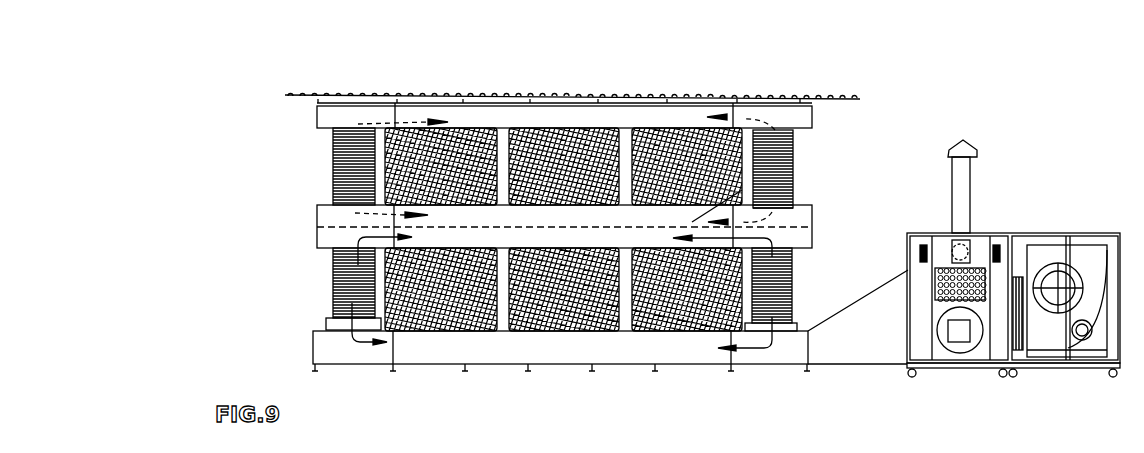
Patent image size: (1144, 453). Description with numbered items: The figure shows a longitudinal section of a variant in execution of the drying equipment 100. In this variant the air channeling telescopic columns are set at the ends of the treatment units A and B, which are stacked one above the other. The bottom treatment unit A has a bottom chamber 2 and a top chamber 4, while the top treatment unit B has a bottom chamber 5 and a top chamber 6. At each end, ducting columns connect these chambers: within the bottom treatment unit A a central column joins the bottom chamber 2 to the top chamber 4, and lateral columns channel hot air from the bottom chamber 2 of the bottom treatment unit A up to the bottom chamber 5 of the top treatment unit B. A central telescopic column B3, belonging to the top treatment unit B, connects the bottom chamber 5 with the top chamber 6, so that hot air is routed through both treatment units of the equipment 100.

The drying equipment 100 is at (918, 94).
The bottom chamber of the bottom treatment unit 2 is at (410, 342).
The top chamber of the bottom treatment unit 4 is at (798, 244).
The bottom chamber of the top treatment unit 5 is at (790, 170).
The top chamber of the top treatment unit 6 is at (410, 113).
The central telescopic column B3 is at (828, 68).
The bottom treatment unit A is at (262, 286).
The top treatment unit B is at (280, 161).